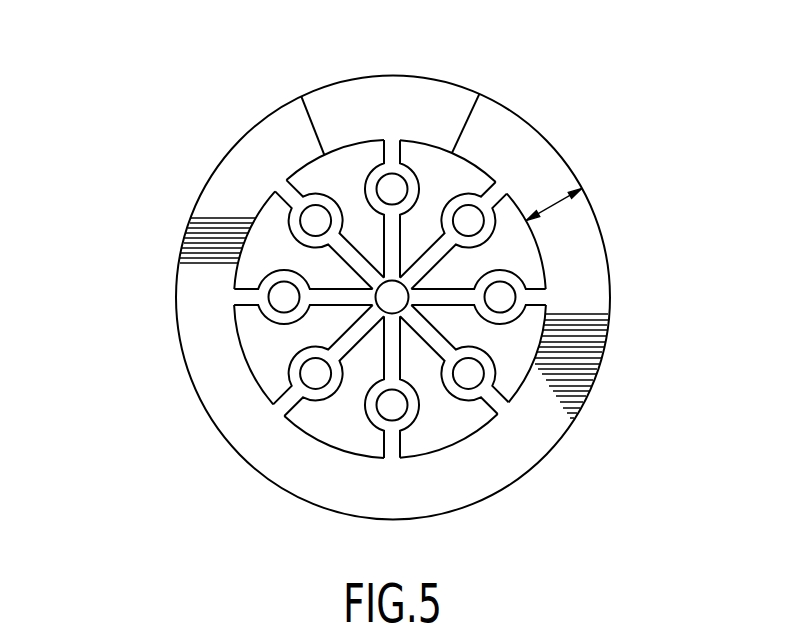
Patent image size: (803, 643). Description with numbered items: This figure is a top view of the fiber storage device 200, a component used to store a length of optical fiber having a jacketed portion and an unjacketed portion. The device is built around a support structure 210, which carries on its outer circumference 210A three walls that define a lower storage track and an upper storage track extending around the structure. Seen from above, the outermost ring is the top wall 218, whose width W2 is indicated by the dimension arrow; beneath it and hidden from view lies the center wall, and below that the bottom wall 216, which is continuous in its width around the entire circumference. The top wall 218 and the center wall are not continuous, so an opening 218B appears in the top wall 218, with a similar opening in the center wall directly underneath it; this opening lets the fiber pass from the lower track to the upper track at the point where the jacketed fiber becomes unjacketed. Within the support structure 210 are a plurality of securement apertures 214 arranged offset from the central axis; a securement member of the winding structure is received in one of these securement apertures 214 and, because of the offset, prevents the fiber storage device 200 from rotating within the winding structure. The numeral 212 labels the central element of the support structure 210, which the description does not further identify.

The fiber storage device 200 is at (563, 128).
The support structure 210 is at (335, 412).
The outer circumference 210A is at (245, 360).
The central hub aperture 212 is at (388, 298).
The securement apertures 214 is at (473, 375).
The bottom wall 216 is at (406, 118).
The top wall 218 is at (600, 301).
The opening in top wall 218B is at (470, 85).
The width W2 is at (556, 206).